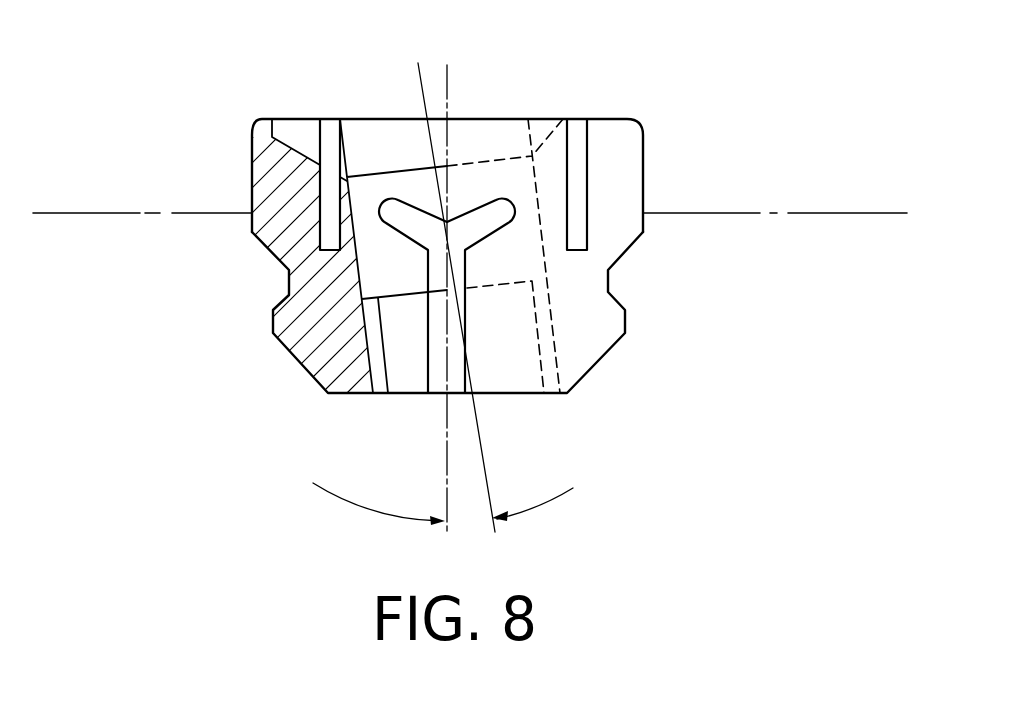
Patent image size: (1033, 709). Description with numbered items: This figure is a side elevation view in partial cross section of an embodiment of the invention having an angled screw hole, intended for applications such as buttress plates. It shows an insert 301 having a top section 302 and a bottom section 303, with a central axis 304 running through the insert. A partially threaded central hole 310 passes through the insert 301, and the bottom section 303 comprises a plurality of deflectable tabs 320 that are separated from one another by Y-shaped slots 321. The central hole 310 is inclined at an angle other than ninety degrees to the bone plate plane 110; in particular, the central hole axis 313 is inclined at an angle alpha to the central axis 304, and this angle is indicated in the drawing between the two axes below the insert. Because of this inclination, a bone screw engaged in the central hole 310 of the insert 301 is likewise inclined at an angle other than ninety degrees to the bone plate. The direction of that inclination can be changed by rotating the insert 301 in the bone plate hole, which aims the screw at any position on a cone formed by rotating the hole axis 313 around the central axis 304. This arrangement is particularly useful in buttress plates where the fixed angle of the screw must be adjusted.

The bone plate plane 110 is at (128, 172).
The insert 301 is at (555, 224).
The top section 302 is at (722, 186).
The bottom section 303 is at (730, 287).
The central axis 304 is at (449, 92).
The central hole 310 is at (377, 119).
The central hole axis 313 is at (421, 77).
The deflectable tabs 320 is at (593, 345).
The Y-shaped slots 321 is at (437, 395).